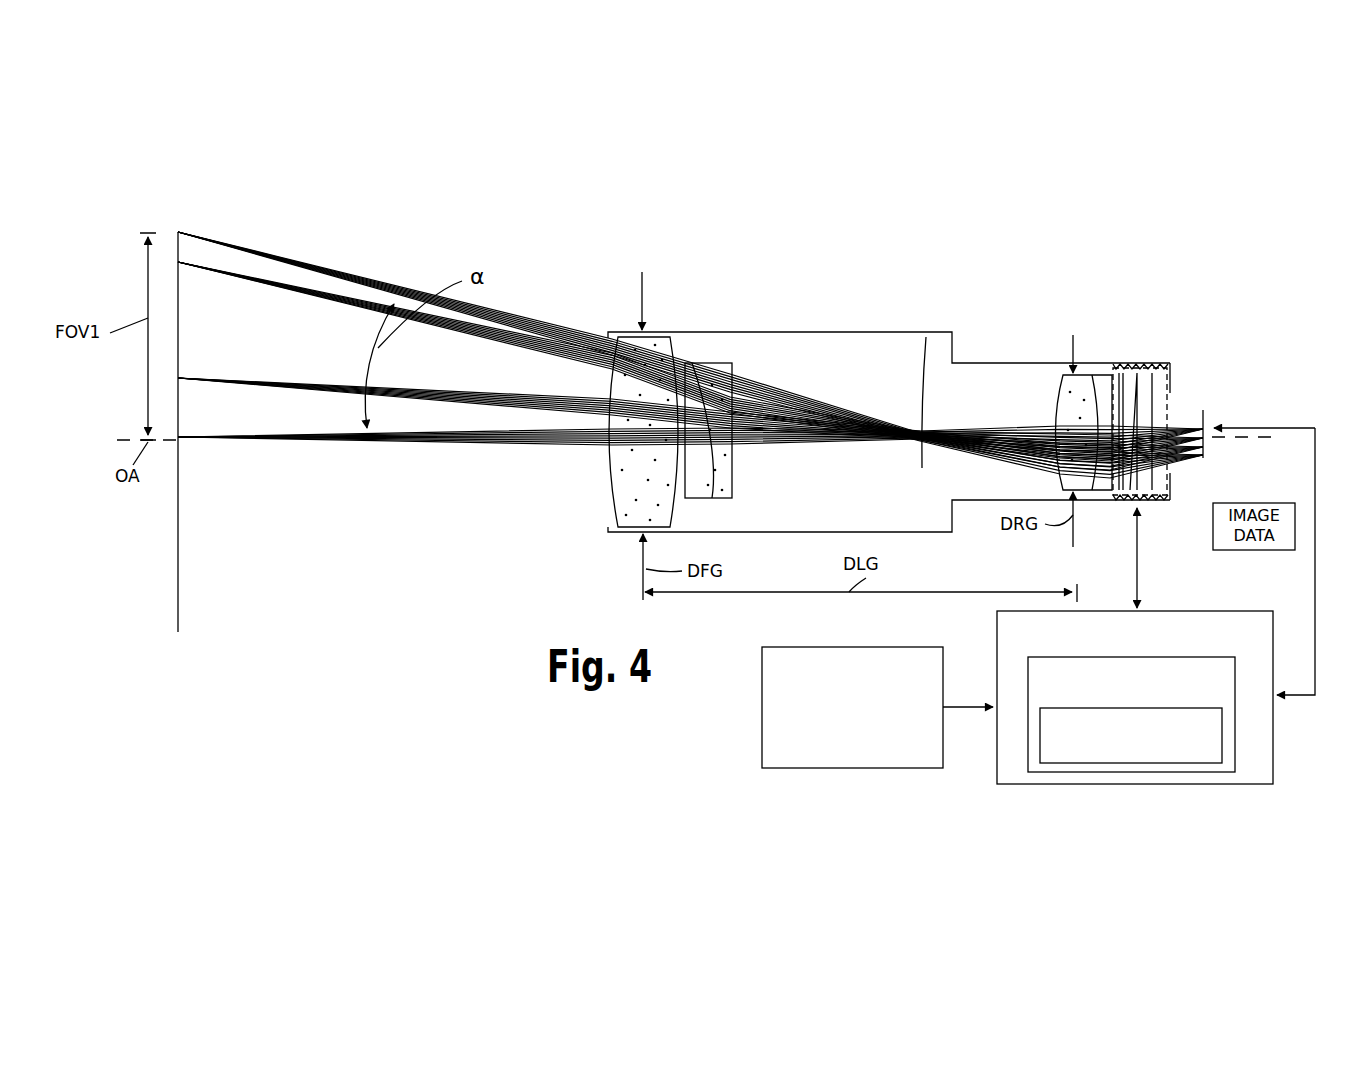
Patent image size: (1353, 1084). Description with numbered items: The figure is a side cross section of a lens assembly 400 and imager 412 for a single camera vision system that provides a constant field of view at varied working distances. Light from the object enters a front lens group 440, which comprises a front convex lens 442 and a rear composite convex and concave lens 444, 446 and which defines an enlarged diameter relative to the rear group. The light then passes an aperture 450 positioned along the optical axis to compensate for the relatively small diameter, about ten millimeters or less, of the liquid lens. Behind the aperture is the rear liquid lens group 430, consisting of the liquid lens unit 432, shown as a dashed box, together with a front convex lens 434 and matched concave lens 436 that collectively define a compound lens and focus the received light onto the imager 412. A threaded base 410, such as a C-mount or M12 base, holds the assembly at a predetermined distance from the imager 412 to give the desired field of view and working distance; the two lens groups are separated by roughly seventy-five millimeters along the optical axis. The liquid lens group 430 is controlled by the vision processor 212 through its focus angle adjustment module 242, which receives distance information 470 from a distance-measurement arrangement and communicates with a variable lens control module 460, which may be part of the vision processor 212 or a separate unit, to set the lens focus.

The lens assembly 400 is at (736, 298).
The front lens group 440 is at (706, 401).
The front convex lens 442 is at (622, 483).
The rear composite convex lens 444 is at (714, 367).
The rear composite concave lens 446 is at (733, 366).
The aperture 450 is at (926, 337).
The front convex lens 434 is at (1067, 377).
The matched concave lens 436 is at (1103, 380).
The rear liquid lens group 430 is at (1124, 341).
The threaded base 410 is at (1144, 356).
The liquid lens unit 432 is at (1170, 360).
The imager 412 is at (1204, 406).
The distance information 470 is at (845, 646).
The vision processor 212 is at (1166, 697).
The focus angle adjustment module 242 is at (1235, 697).
The variable lens control module 460 is at (1222, 752).